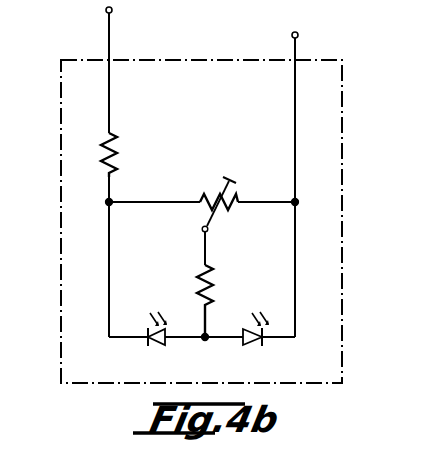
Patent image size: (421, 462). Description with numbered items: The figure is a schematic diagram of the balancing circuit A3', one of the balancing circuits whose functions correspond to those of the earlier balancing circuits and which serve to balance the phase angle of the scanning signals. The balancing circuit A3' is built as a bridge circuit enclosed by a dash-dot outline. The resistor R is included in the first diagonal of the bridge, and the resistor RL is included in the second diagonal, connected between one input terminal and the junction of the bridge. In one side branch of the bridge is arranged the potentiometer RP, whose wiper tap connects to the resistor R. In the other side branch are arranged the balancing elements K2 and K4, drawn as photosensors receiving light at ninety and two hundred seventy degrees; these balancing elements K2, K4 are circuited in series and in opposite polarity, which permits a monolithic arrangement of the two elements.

The balancing circuit A3' is at (178, 221).
The resistor RL is at (119, 150).
The potentiometer RP is at (220, 206).
The resistor R is at (214, 283).
The balancing element K2 is at (164, 342).
The balancing element K4 is at (259, 342).